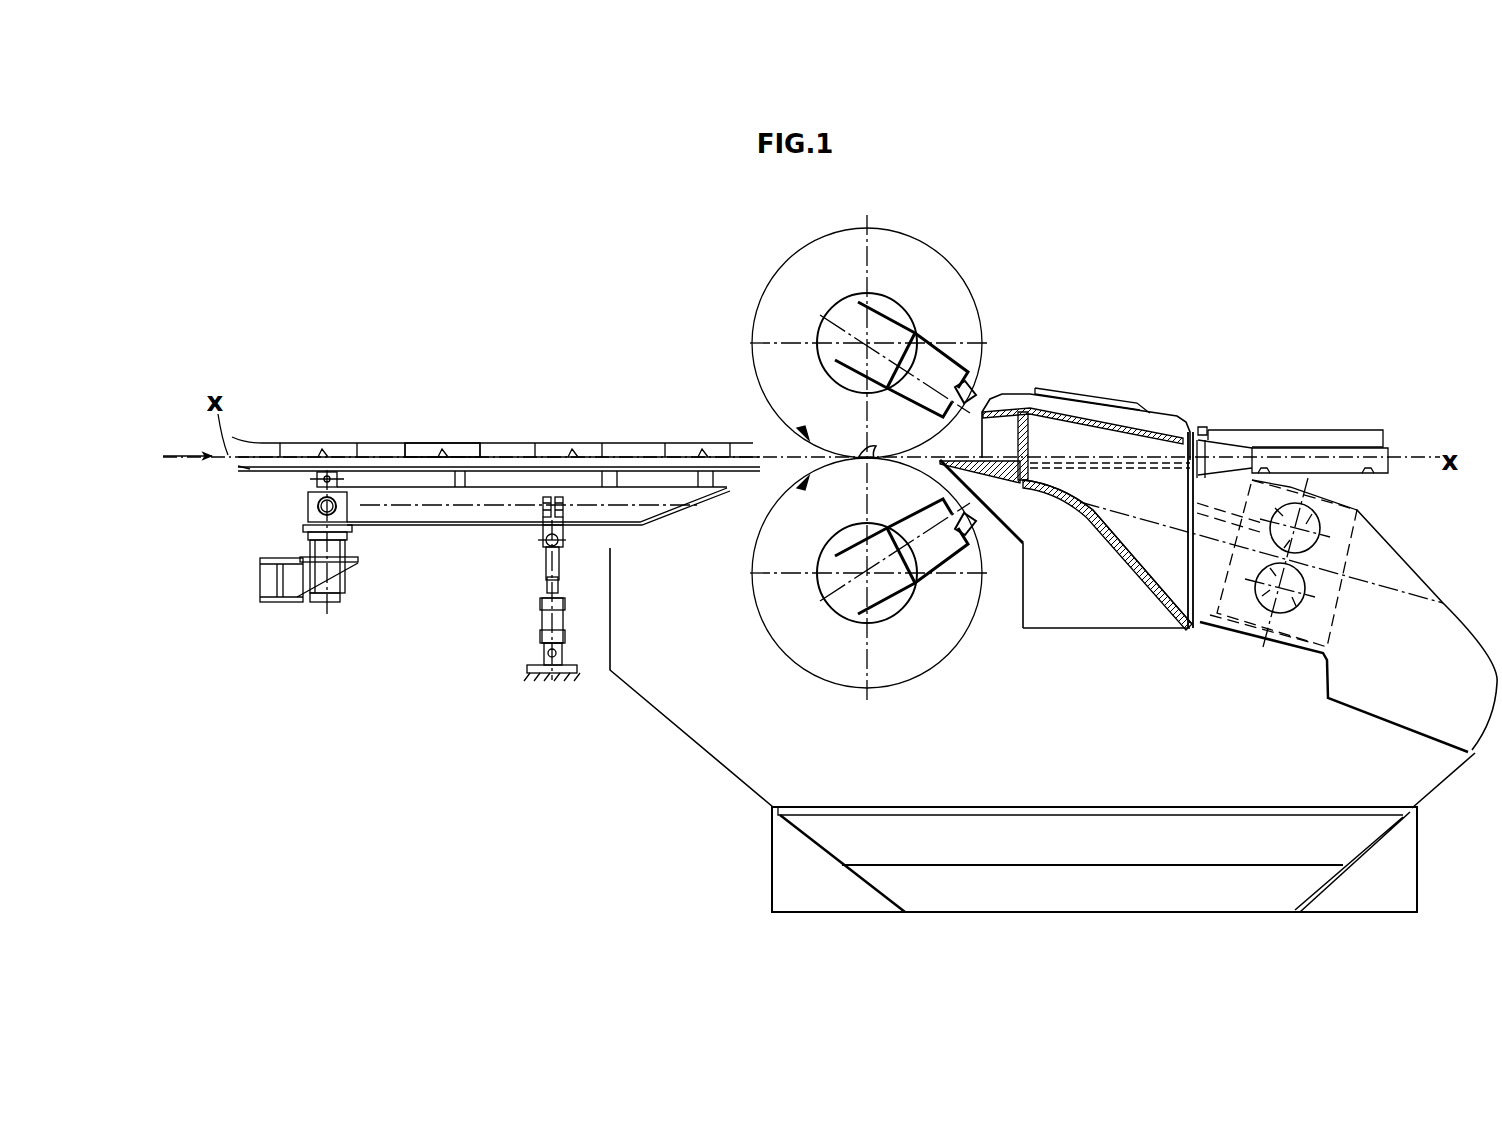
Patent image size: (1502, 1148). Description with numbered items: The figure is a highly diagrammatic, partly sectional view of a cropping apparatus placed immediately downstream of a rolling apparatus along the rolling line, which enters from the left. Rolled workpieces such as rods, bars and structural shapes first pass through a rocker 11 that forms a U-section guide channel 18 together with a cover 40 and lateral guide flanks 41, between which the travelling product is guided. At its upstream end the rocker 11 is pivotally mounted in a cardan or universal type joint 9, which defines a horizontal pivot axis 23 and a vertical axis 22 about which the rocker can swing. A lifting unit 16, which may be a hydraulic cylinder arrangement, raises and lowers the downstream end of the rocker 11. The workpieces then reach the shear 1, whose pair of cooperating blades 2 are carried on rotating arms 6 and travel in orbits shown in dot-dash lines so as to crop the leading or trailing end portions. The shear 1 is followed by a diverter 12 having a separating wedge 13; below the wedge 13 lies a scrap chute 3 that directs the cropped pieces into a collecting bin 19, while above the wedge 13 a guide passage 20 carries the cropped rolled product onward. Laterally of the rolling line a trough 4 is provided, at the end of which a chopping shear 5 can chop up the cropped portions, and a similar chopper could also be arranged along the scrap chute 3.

The shear 1 is at (930, 312).
The blades 2 is at (978, 388).
The scrap chute 3 is at (1021, 508).
The trough 4 is at (1196, 538).
The chopping shear 5 is at (1315, 530).
The arms 6 is at (937, 372).
The cardan joint 9 is at (363, 533).
The rocker 11 is at (447, 527).
The diverter 12 is at (1127, 390).
The separating wedge 13 is at (1063, 481).
The lifting unit 16 is at (569, 627).
The guide channel 18 is at (500, 443).
The collecting bin 19 is at (1078, 848).
The guide passage 20 is at (1043, 447).
The vertical axis 22 is at (326, 616).
The horizontal pivot axis 23 is at (300, 506).
The cover 40 is at (325, 440).
The lateral guide flanks 41 is at (425, 440).